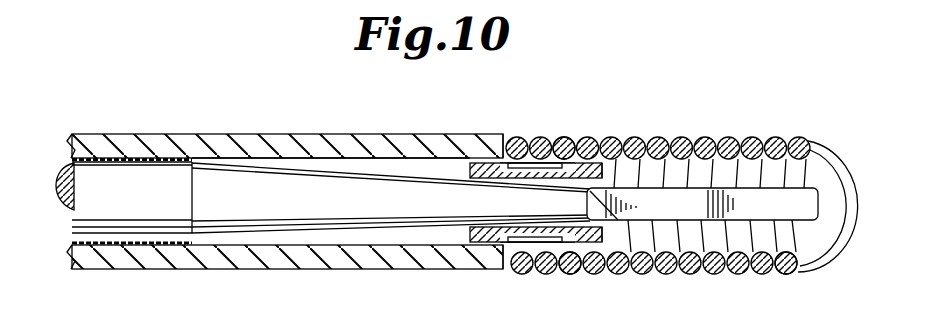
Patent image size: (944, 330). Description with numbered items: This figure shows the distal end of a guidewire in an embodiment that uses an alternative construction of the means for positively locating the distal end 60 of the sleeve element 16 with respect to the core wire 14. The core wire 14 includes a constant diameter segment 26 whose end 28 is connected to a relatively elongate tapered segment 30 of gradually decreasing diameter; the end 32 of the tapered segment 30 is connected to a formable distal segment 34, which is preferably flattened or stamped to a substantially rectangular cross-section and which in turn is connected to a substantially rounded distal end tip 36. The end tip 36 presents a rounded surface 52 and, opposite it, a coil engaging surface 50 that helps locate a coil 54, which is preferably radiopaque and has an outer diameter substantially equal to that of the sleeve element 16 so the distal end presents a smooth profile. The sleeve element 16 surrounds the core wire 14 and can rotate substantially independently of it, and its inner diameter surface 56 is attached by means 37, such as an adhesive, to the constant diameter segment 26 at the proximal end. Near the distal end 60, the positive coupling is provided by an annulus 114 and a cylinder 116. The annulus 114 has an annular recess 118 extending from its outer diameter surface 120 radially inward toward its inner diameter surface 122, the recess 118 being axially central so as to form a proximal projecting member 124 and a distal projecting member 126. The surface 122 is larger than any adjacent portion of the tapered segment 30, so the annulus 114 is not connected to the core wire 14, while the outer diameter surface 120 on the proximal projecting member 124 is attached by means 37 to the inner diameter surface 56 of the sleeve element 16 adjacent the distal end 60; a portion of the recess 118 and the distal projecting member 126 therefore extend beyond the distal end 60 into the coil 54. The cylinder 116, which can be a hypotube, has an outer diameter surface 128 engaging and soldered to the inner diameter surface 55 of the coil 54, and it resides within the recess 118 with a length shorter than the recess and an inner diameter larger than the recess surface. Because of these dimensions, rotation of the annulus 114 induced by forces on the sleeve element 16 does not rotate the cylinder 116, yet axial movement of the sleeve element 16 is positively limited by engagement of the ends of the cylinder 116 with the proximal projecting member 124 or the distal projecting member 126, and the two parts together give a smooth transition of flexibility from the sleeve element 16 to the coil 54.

The core wire 14 is at (110, 182).
The sleeve element 16 is at (247, 143).
The constant diameter segment 26 is at (142, 205).
The end of constant diameter segment 28 is at (192, 269).
The tapered segment 30 is at (326, 206).
The end of tapered segment 32 is at (562, 273).
The formable distal segment 34 is at (677, 273).
The distal end tip 36 is at (817, 245).
The attachment means 37 is at (147, 148).
The coil engaging surface 50 is at (797, 273).
The rounded surface 52 is at (837, 183).
The coil 54 is at (727, 275).
The inner diameter surface of coil 55 is at (755, 140).
The inner diameter surface of sleeve element 56 is at (288, 157).
The distal end of sleeve element 60 is at (503, 137).
The annulus 114 is at (460, 143).
The cylinder 116 is at (557, 160).
The recess 118 is at (535, 162).
The outer diameter surface of annulus 120 is at (598, 187).
The inner diameter surface of annulus 122 is at (613, 225).
The proximal projecting member 124 is at (470, 168).
The distal projecting member 126 is at (603, 166).
The outer diameter surface of cylinder 128 is at (525, 262).